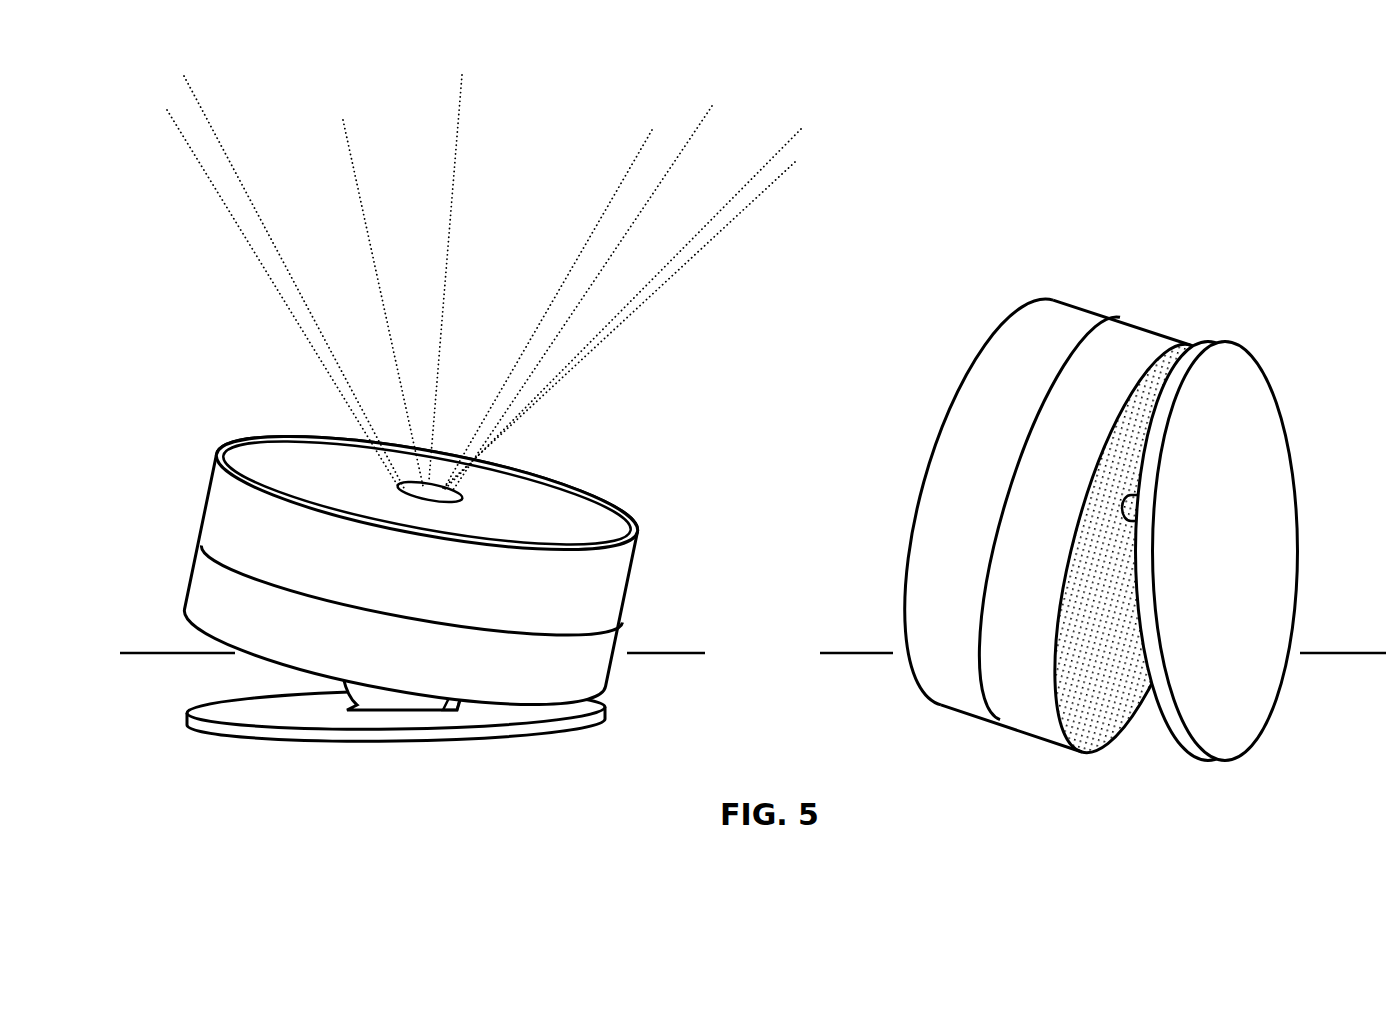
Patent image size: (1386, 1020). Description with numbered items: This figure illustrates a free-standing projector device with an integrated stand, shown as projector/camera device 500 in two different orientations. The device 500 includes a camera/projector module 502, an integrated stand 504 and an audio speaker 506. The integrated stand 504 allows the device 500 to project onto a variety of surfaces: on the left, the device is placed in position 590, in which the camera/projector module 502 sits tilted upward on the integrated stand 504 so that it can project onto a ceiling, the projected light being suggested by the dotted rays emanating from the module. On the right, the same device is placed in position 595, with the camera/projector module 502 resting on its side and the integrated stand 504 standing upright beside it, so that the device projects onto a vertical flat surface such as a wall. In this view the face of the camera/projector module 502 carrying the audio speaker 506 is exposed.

The projector/camera device 500 is at (791, 556).
The camera/projector module 502 is at (577, 524).
The integrated stand 504 is at (237, 708).
The audio speaker 506 is at (1090, 711).
The position 590 is at (268, 379).
The position 595 is at (1067, 230).